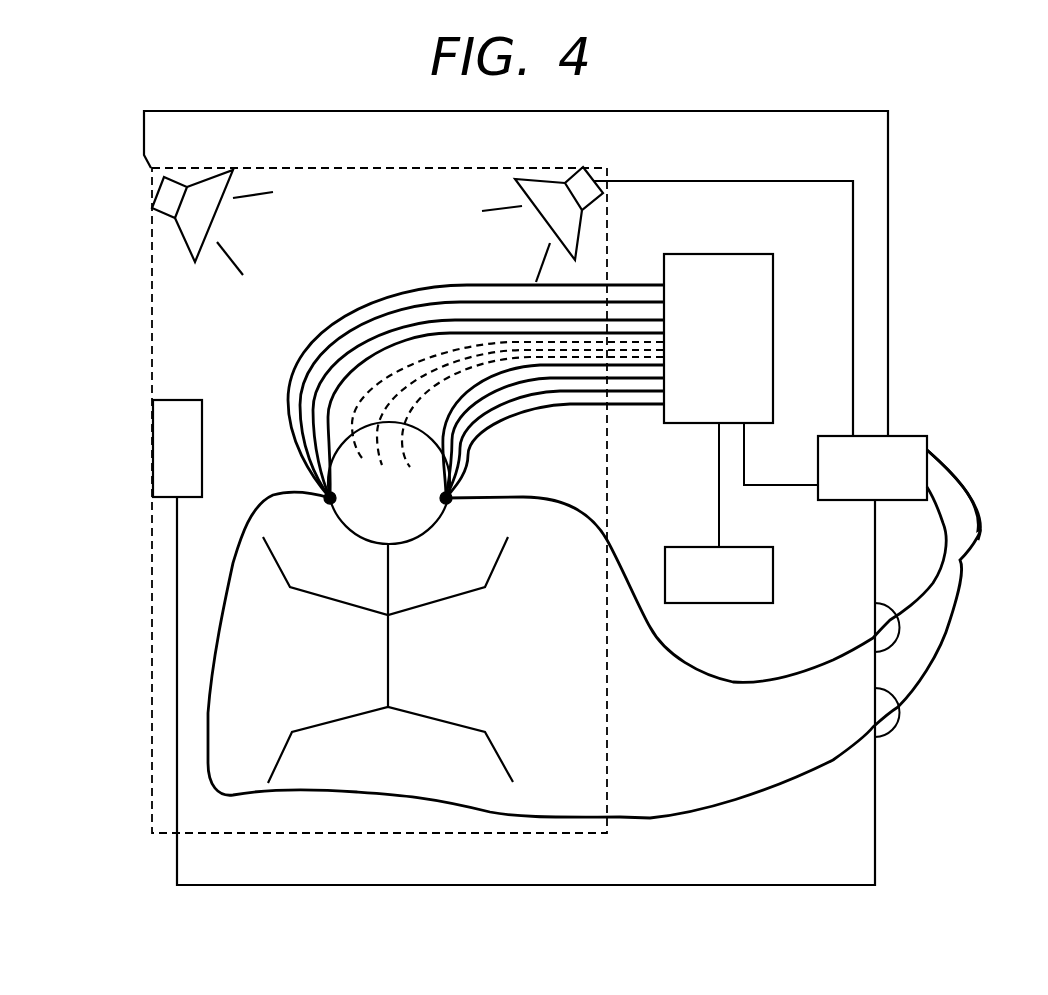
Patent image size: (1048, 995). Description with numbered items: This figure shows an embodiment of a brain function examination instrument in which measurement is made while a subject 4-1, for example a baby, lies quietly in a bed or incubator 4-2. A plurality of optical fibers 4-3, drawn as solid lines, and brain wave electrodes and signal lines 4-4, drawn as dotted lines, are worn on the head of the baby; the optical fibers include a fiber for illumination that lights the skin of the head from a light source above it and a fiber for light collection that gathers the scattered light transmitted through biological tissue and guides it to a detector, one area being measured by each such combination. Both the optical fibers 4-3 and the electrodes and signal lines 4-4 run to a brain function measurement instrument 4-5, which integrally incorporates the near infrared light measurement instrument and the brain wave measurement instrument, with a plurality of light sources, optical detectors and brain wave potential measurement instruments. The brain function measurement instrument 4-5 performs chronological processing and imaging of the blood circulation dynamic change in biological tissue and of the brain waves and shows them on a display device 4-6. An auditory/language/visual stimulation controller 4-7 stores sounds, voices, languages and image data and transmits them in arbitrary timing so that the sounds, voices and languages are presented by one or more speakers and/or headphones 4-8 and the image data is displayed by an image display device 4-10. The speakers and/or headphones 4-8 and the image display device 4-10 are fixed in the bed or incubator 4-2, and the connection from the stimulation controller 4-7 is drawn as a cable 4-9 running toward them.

The subject 4-1 is at (390, 688).
The bed or incubator 4-2 is at (152, 562).
The optical fibers 4-3 is at (297, 355).
The brain wave electrodes and signal lines 4-4 is at (413, 368).
The brain function measurement instrument 4-5 is at (773, 295).
The display device 4-6 is at (773, 558).
The auditory/language/visual stimulation controller 4-7 is at (912, 435).
The speakers and/or headphones 4-8 is at (163, 200).
The cable 4-9 is at (943, 643).
The image display device 4-10 is at (167, 447).